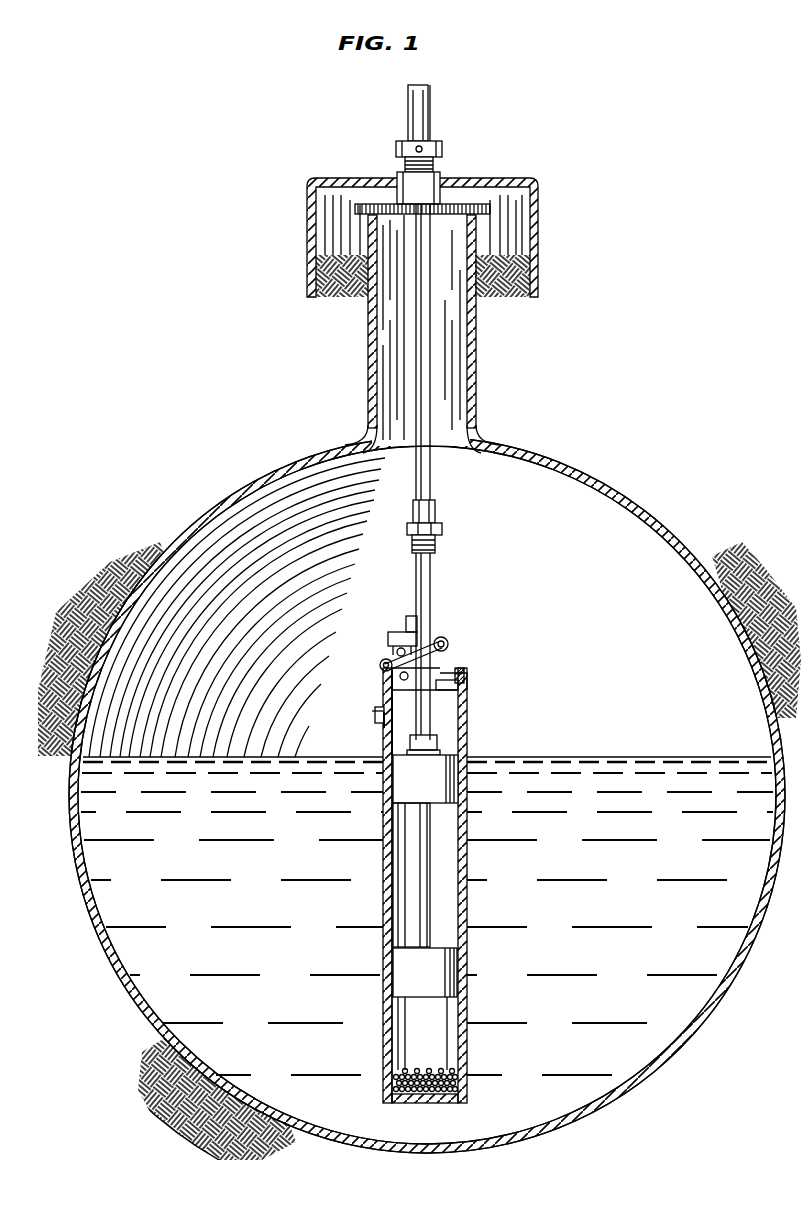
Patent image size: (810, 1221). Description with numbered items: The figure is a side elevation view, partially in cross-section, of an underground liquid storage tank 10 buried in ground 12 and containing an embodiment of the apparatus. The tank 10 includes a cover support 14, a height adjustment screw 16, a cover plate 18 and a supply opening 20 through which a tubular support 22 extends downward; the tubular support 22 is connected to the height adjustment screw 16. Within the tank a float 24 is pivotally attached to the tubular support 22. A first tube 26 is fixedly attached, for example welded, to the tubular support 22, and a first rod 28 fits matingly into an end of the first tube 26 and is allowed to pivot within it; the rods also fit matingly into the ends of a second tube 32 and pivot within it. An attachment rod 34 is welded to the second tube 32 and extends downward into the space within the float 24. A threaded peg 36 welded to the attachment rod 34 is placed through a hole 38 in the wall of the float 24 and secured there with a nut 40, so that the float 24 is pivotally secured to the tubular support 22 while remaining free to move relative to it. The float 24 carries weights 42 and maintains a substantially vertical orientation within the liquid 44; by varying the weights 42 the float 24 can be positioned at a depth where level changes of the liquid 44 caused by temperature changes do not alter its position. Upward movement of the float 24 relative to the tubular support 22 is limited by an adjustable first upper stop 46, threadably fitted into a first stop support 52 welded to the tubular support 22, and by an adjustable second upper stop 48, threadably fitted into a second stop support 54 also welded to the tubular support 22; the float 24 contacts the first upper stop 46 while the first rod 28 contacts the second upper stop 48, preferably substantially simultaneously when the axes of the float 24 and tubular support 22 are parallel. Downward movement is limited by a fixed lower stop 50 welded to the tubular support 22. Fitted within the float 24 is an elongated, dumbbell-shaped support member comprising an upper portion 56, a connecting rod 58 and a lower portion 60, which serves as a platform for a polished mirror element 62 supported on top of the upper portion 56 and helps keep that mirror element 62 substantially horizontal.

The liquid storage tank 10 is at (658, 497).
The ground 12 is at (112, 560).
The cover support 14 is at (542, 232).
The height adjustment screw 16 is at (440, 148).
The cover plate 18 is at (462, 203).
The supply opening 20 is at (443, 357).
The tubular support 22 is at (417, 377).
The float 24 is at (468, 938).
The first tube 26 is at (446, 636).
The first rod 28 is at (428, 398).
The second tube 32 is at (381, 662).
The attachment rod 34 is at (392, 688).
The threaded peg 36 is at (375, 726).
The hole 38 is at (376, 712).
The nut 40 is at (391, 728).
The weights 42 is at (442, 1068).
The liquid 44 is at (611, 913).
The first upper stop 46 is at (465, 668).
The second upper stop 48 is at (392, 640).
The lower stop 50 is at (404, 675).
The first stop support 52 is at (465, 691).
The second stop support 54 is at (402, 628).
The upper portion 56 is at (434, 793).
The connecting rod 58 is at (432, 947).
The lower portion 60 is at (438, 982).
The polished mirror element 62 is at (443, 742).